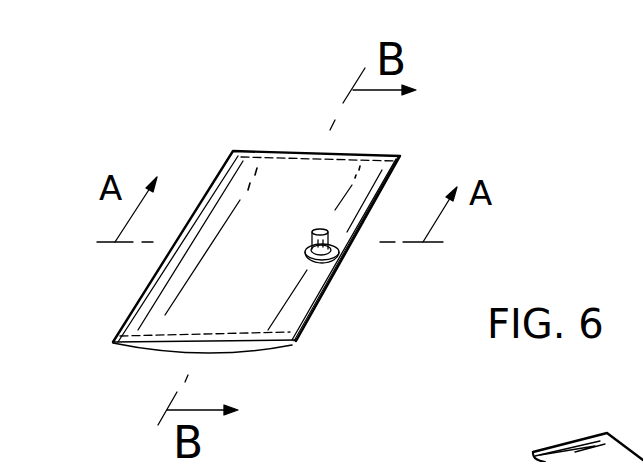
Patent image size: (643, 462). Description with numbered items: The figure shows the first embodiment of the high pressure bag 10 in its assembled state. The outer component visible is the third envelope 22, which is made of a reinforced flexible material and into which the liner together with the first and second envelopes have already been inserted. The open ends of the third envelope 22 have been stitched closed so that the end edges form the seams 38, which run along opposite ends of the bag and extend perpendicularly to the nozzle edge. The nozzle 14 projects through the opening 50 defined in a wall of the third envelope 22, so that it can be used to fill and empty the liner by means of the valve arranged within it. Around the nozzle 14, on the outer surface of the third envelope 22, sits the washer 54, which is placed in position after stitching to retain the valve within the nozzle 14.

The high pressure bag 10 is at (276, 122).
The seams 38 is at (337, 157).
The third envelope 22 is at (313, 312).
The nozzle 14 is at (310, 241).
The washer 54 is at (340, 249).
The opening 50 is at (298, 254).